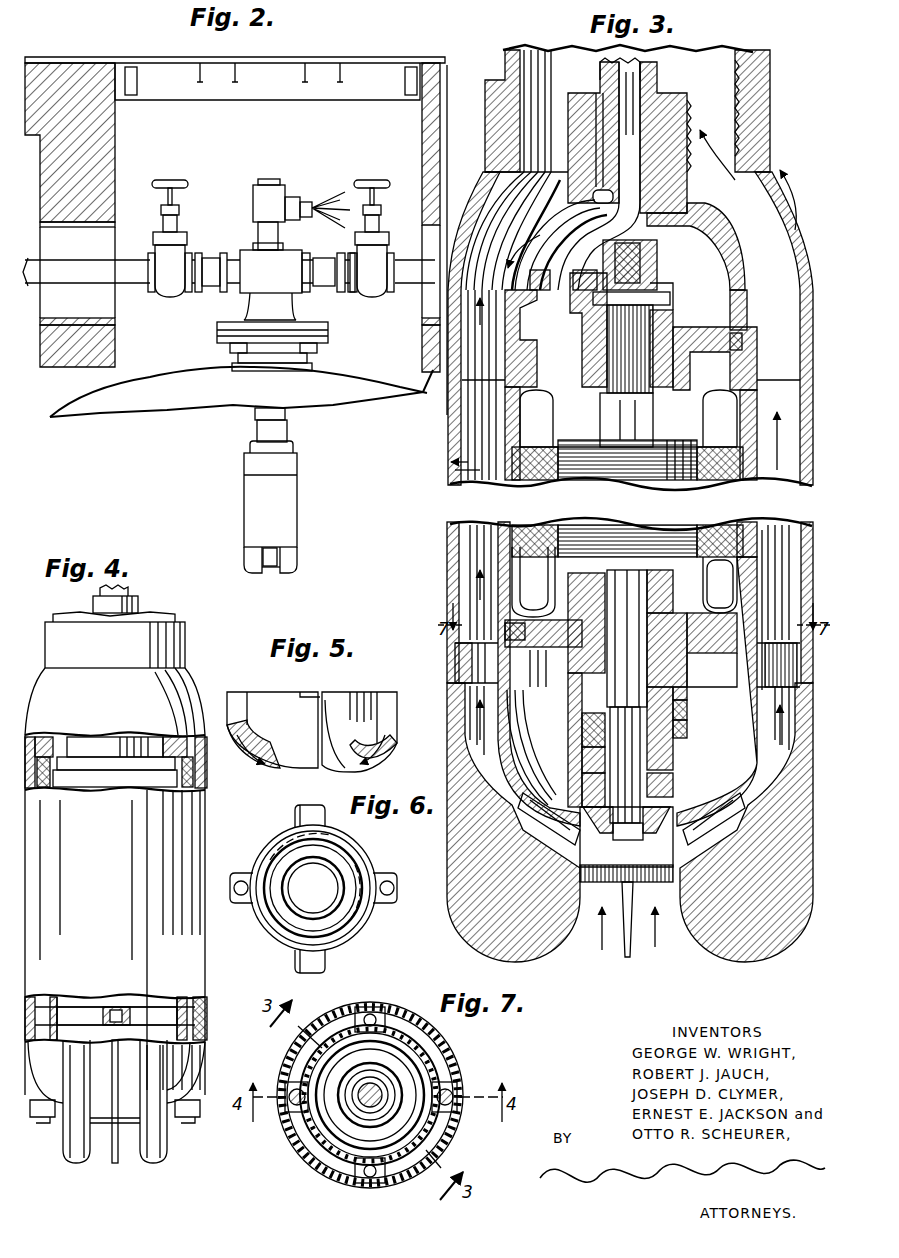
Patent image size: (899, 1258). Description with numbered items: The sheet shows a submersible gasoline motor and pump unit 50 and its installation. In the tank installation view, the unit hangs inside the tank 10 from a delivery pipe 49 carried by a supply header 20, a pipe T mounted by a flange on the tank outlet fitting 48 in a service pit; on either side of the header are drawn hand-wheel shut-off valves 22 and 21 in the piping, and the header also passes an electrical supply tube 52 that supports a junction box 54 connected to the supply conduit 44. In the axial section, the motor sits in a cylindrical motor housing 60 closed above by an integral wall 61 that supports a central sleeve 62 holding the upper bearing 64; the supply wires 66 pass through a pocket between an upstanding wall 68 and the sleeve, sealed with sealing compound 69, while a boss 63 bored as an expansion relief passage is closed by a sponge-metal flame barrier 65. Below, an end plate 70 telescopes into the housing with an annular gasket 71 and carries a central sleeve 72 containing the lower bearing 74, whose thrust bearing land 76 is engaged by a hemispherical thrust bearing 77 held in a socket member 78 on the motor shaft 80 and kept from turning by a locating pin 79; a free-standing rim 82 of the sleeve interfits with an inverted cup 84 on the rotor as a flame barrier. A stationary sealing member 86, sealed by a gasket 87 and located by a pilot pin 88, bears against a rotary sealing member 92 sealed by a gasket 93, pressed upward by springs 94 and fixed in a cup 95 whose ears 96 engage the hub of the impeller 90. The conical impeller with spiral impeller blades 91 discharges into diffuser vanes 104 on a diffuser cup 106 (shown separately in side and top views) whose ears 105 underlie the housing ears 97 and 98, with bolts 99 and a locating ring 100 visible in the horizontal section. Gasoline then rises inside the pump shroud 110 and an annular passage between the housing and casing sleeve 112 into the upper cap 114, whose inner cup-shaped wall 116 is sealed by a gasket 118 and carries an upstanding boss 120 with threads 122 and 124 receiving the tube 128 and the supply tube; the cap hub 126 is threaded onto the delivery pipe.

In FIG. 2, the tank 10 is at (241, 392).
In FIG. 2, the supply header 20 is at (271, 285).
In FIG. 2, the valve 21 is at (372, 185).
In FIG. 2, the valve 22 is at (178, 172).
In FIG. 2, the supply conduit 44 is at (305, 200).
In FIG. 2, the outlet fitting 48 is at (305, 362).
In FIG. 2, the delivery pipe 49 is at (287, 428).
In FIG. 3, the delivery pipe 49 is at (750, 83).
In FIG. 4, the delivery pipe 49 is at (176, 619).
In FIG. 2, the motor and pump unit 50 is at (270, 513).
In FIG. 3, the motor and pump unit 50 is at (454, 464).
In FIG. 4, the motor and pump unit 50 is at (78, 880).
In FIG. 2, the electrical supply tube 52 is at (258, 236).
In FIG. 3, the electrical supply tube 52 is at (670, 67).
In FIG. 4, the electrical supply tube 52 is at (140, 608).
In FIG. 2, the junction box 54 is at (253, 198).
In FIG. 3, the motor housing 60 is at (487, 487).
In FIG. 3, the integral wall 61 is at (707, 333).
In FIG. 3, the central sleeve 62 is at (690, 303).
In FIG. 3, the boss 63 is at (660, 255).
In FIG. 3, the upper bearing 64 is at (650, 290).
In FIG. 3, the flame barrier 65 is at (640, 250).
In FIG. 3, the supply wires 66 is at (614, 230).
In FIG. 3, the upstanding wall 68 is at (519, 294).
In FIG. 3, the sealing compound 69 is at (588, 270).
In FIG. 3, the end plate 70 is at (498, 635).
In FIG. 3, the annular gasket 71 is at (500, 615).
In FIG. 3, the central sleeve 72 is at (687, 710).
In FIG. 3, the lower bearing 74 is at (673, 693).
In FIG. 3, the thrust bearing land 76 is at (683, 667).
In FIG. 3, the hemispherical thrust bearing 77 is at (743, 527).
In FIG. 3, the socket member 78 is at (663, 527).
In FIG. 3, the locating pin 79 is at (590, 523).
In FIG. 3, the motor shaft 80 is at (627, 696).
In FIG. 3, the free-standing rim 82 is at (693, 527).
In FIG. 3, the inverted cup 84 is at (693, 633).
In FIG. 3, the stationary sealing member 86 is at (687, 722).
In FIG. 3, the resilient annular gasket 87 is at (687, 740).
In FIG. 3, the pilot pin 88 is at (568, 725).
In FIG. 3, the pump impeller 90 is at (626, 844).
In FIG. 3, the impeller blades 91 is at (714, 819).
In FIG. 3, the rotary sealing member 92 is at (582, 755).
In FIG. 3, the resilient annular gasket 93 is at (673, 783).
In FIG. 3, the springs 94 is at (647, 872).
In FIG. 3, the cup 95 is at (582, 783).
In FIG. 3, the ears 96 is at (540, 813).
In FIG. 4, the ears 97 is at (110, 1007).
In FIG. 7, the ears 97 is at (388, 1010).
In FIG. 4, the ears 98 is at (200, 1000).
In FIG. 7, the ears 98 is at (295, 1085).
In FIG. 4, the bolts 99 is at (40, 792).
In FIG. 7, the bolts 99 is at (455, 1085).
In FIG. 7, the locating ring 100 is at (312, 1162).
In FIG. 5, the diffuser vanes 104 is at (325, 742).
In FIG. 6, the diffuser vanes 104 is at (275, 827).
In FIG. 5, the ears 105 is at (322, 694).
In FIG. 6, the ears 105 is at (240, 872).
In FIG. 5, the diffuser cup 106 is at (265, 700).
In FIG. 6, the diffuser cup 106 is at (270, 835).
In FIG. 3, the pump shroud 110 is at (753, 950).
In FIG. 4, the pump shroud 110 is at (80, 1150).
In FIG. 3, the casing sleeve 112 is at (805, 485).
In FIG. 2, the upper cap 114 is at (297, 468).
In FIG. 3, the upper cap 114 is at (773, 183).
In FIG. 4, the upper cap 114 is at (197, 680).
In FIG. 3, the inner cup-shaped wall 116 is at (745, 283).
In FIG. 3, the annular gasket 118 is at (745, 343).
In FIG. 3, the upstanding boss 120 is at (587, 93).
In FIG. 3, the threads 122 is at (653, 180).
In FIG. 3, the threads 124 is at (680, 97).
In FIG. 3, the hub 126 is at (752, 90).
In FIG. 4, the hub 126 is at (180, 648).
In FIG. 3, the tube 128 is at (650, 57).
In FIG. 4, the tube 128 is at (130, 590).